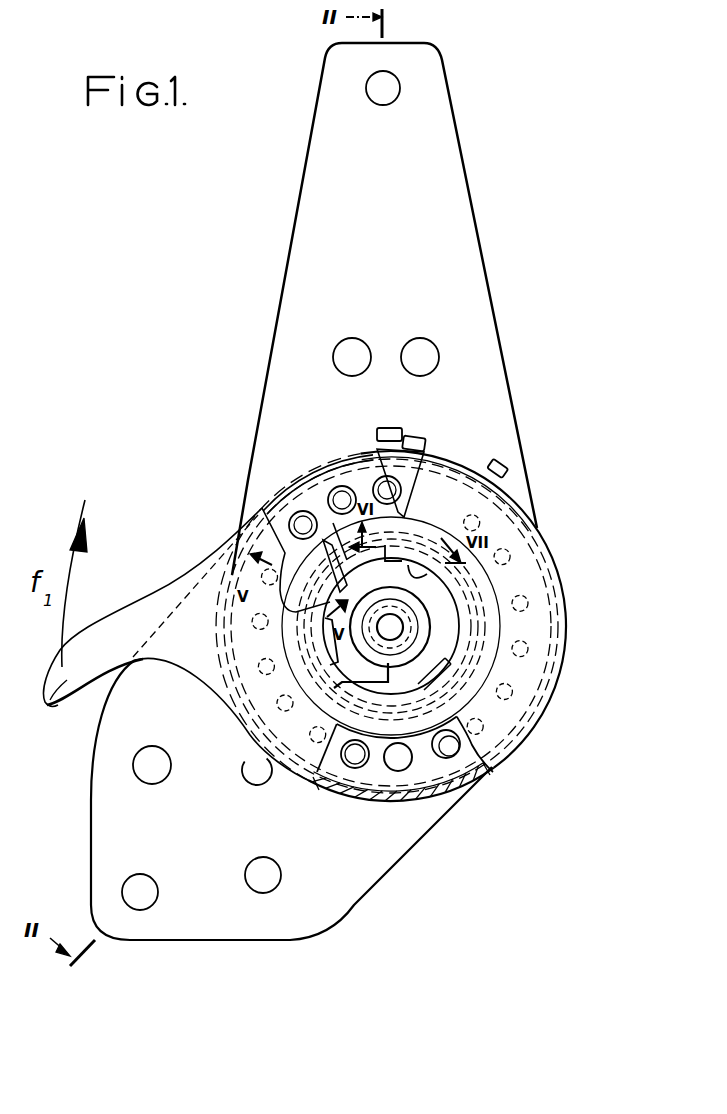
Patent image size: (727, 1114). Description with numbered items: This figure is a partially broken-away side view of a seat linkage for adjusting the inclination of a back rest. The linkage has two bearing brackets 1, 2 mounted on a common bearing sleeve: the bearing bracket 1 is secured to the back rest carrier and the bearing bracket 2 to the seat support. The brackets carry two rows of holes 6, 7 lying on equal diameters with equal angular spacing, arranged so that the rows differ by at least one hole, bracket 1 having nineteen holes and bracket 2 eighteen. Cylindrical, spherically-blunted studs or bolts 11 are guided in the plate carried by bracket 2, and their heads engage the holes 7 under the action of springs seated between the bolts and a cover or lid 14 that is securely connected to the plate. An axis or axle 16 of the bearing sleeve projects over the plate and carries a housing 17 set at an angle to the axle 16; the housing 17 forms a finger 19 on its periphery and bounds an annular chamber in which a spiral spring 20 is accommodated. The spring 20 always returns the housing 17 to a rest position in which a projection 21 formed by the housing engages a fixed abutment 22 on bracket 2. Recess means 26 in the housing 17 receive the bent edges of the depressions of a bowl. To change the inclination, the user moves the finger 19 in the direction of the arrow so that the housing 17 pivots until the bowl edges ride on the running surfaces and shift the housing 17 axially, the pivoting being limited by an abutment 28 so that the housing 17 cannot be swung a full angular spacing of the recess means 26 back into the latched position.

The bearing bracket 1 is at (443, 141).
The bearing bracket 2 is at (250, 918).
The holes 6 is at (355, 765).
The holes 7 is at (329, 770).
The studs or bolts 11 is at (302, 516).
The cover or lid 14 is at (403, 793).
The axis or axle 16 is at (400, 628).
The housing 17 is at (567, 655).
The finger 19 is at (52, 702).
The spiral spring 20 is at (324, 540).
The projection 21 is at (420, 437).
The fixed abutment 22 is at (391, 428).
The recess means 26 is at (392, 619).
The abutment 28 is at (502, 468).